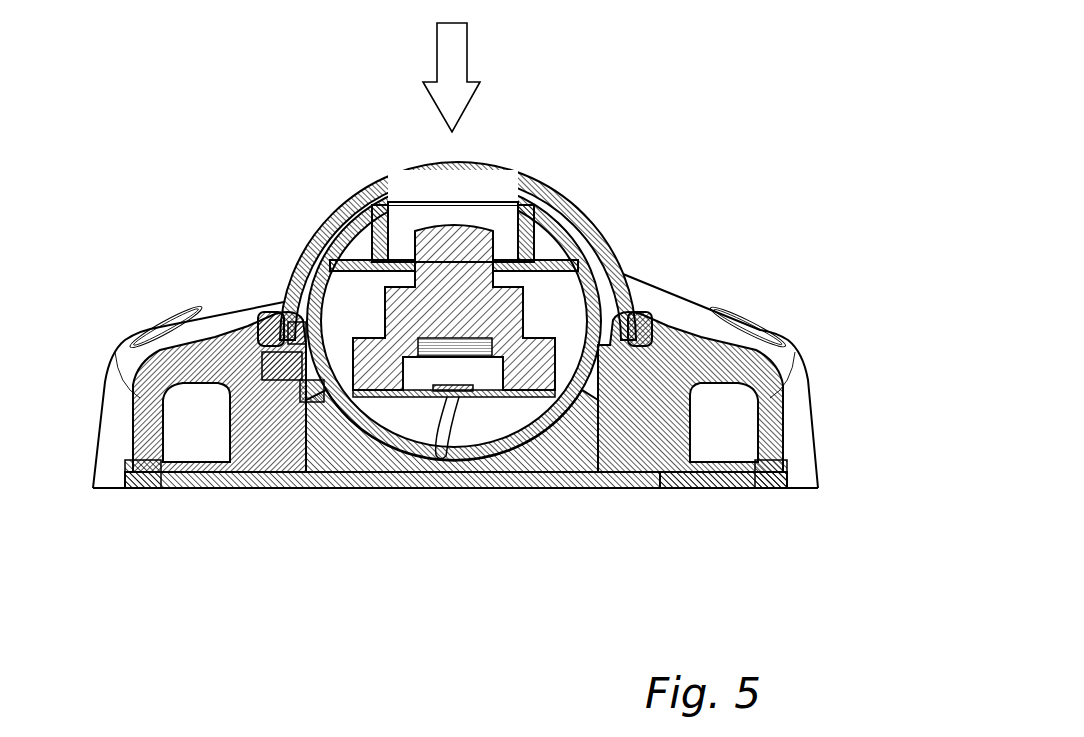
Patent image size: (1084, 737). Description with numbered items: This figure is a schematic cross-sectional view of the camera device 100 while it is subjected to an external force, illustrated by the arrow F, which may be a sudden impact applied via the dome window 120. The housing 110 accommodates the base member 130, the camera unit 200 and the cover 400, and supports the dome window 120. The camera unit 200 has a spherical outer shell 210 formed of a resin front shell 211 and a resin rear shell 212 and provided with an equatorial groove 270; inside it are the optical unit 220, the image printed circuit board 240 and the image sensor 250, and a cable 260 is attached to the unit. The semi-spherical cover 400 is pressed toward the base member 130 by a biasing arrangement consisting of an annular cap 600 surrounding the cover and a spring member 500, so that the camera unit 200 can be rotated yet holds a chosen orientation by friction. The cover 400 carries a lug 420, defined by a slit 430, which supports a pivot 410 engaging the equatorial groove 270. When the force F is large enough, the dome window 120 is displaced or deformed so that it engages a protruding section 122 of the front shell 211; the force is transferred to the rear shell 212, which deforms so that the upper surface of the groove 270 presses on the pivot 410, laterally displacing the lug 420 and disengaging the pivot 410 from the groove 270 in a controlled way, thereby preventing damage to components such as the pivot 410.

The camera device 100 is at (358, 125).
The housing 110 is at (803, 436).
The dome window 120 is at (522, 166).
The protruding section 122 is at (388, 200).
The base member 130 is at (739, 488).
The camera unit 200 is at (688, 622).
The outer shell 210 is at (683, 560).
The front shell 211 is at (630, 488).
The rear shell 212 is at (574, 488).
The optical unit 220 is at (380, 393).
The image printed circuit board 240 is at (412, 396).
The image sensor 250 is at (445, 440).
The cable 260 is at (454, 398).
The equatorial groove 270 is at (288, 318).
The cover 400 is at (325, 232).
The pivot 410 is at (272, 330).
The lug 420 is at (300, 375).
The slit 430 is at (322, 390).
The spring member 500 is at (640, 330).
The annular cap 600 is at (645, 375).